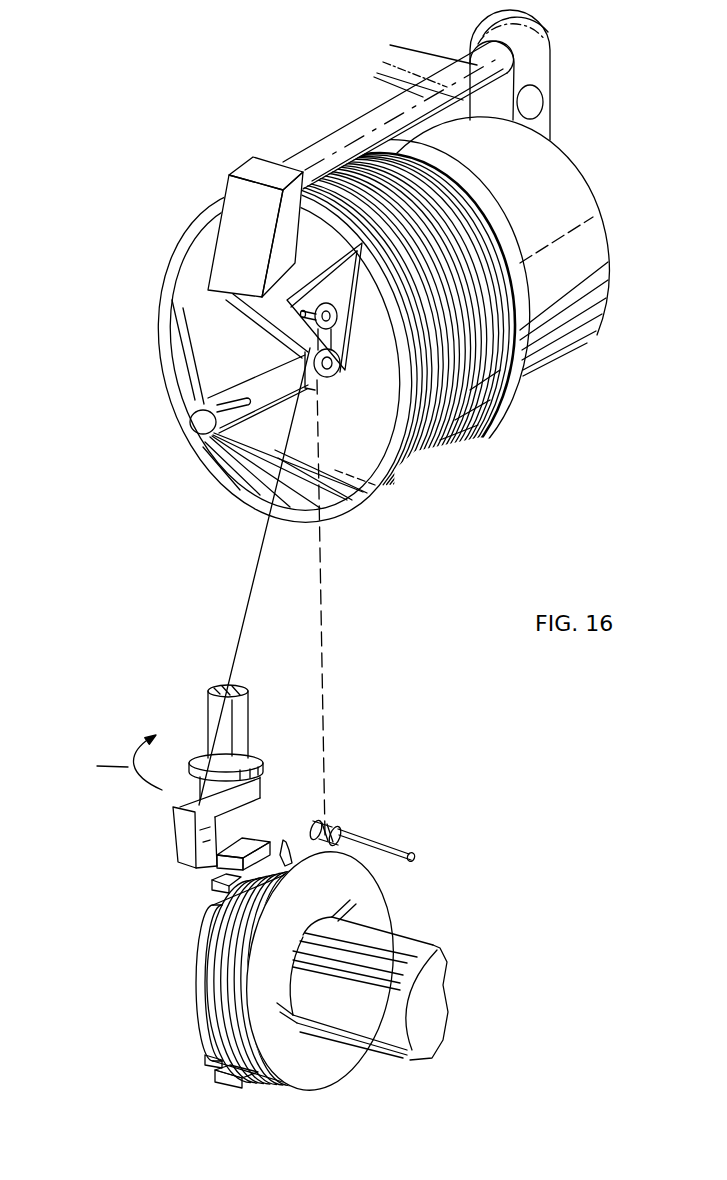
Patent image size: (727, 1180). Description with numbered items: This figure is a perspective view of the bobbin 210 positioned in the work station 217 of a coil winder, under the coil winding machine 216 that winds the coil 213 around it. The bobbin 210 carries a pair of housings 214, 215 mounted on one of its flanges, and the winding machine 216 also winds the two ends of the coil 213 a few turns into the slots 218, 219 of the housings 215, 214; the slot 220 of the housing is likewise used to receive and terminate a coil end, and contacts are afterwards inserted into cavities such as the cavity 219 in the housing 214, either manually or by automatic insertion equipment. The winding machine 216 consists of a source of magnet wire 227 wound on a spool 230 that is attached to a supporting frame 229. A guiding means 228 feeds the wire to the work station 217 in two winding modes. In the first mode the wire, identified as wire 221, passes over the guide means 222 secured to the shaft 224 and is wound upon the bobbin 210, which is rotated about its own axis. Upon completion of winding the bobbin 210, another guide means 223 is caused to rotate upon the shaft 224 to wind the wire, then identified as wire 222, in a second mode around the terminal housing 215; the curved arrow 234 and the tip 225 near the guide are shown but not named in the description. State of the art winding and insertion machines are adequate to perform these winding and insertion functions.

The bobbin 210 is at (323, 1074).
The coil 213 is at (225, 1008).
The housing 214 is at (245, 1080).
The housing 215 is at (253, 842).
The coil winding machine 216 is at (190, 213).
The work station 217 is at (472, 937).
The slot 218 is at (278, 863).
The slot 219 is at (203, 1070).
The slot 220 is at (248, 584).
The wire 221 is at (322, 614).
The guide means 222 is at (380, 827).
The guide means 223 is at (160, 844).
The shaft 224 is at (243, 723).
The bolt tip 225 is at (412, 855).
The magnet wire 227 is at (470, 430).
The guiding means 228 is at (308, 322).
The supporting frame 229 is at (333, 133).
The spool 230 is at (508, 385).
The rotation arrow 234 is at (103, 762).